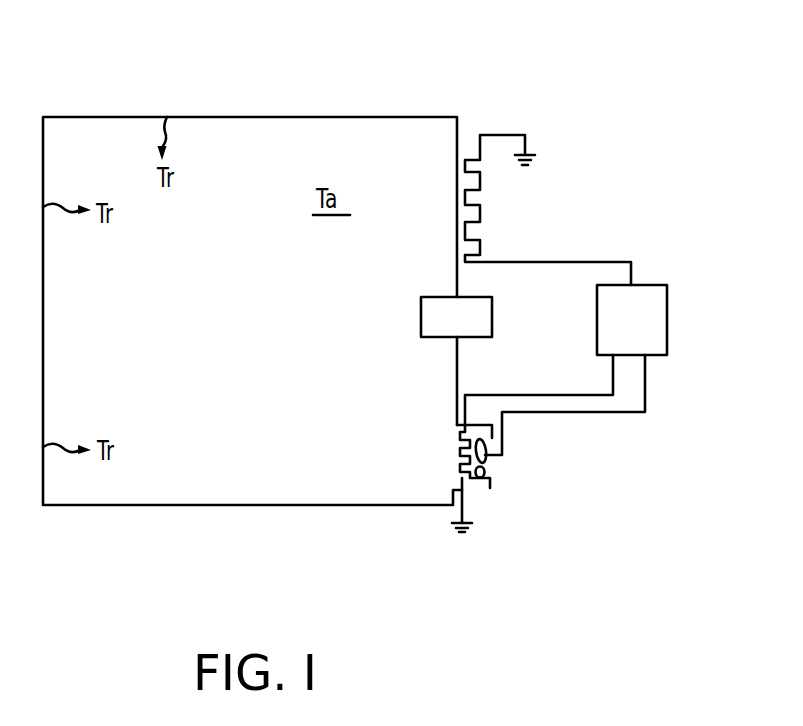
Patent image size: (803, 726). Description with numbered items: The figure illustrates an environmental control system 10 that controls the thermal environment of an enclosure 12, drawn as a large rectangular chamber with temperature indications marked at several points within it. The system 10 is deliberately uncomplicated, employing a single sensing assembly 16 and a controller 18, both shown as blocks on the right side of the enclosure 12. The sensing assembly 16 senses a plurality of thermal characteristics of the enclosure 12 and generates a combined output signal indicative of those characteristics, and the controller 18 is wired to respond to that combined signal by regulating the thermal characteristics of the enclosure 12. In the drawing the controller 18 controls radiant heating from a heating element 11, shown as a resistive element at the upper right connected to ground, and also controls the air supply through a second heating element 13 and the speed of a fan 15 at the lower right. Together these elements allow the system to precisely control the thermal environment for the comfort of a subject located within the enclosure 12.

The environmental control system 10 is at (690, 233).
The heating element 11 is at (480, 202).
The enclosure 12 is at (255, 117).
The heating element 13 is at (470, 476).
The fan 15 is at (492, 463).
The sensing assembly 16 is at (470, 332).
The controller 18 is at (645, 334).